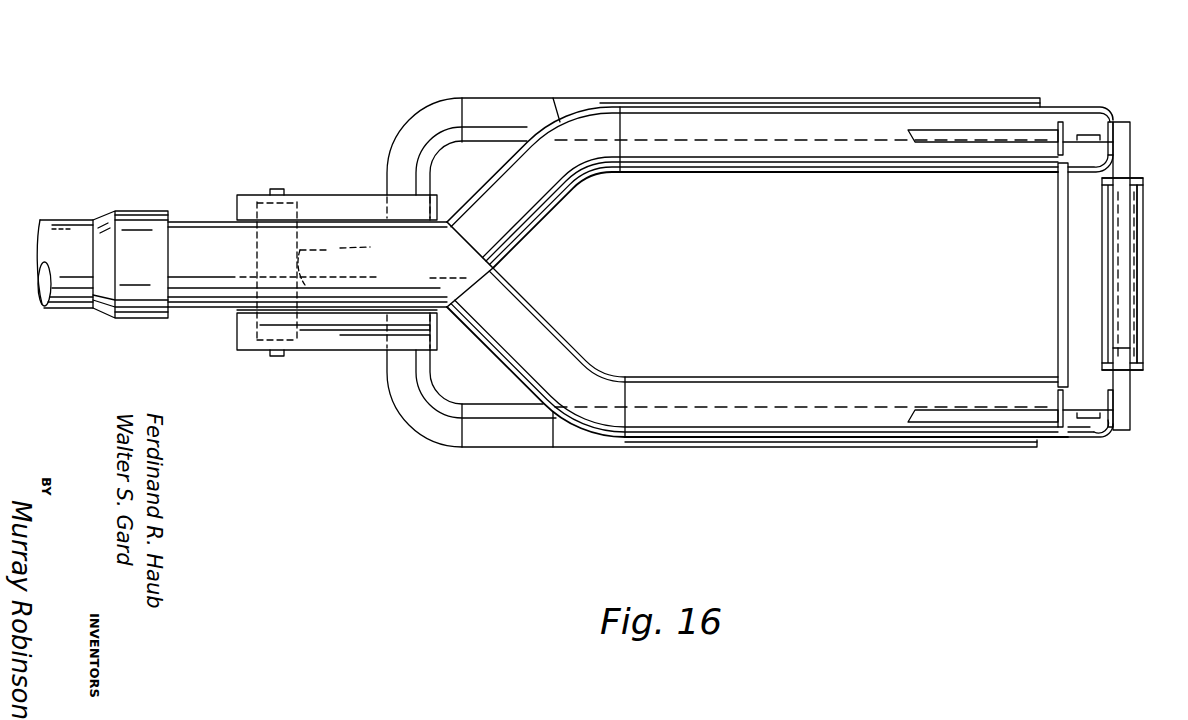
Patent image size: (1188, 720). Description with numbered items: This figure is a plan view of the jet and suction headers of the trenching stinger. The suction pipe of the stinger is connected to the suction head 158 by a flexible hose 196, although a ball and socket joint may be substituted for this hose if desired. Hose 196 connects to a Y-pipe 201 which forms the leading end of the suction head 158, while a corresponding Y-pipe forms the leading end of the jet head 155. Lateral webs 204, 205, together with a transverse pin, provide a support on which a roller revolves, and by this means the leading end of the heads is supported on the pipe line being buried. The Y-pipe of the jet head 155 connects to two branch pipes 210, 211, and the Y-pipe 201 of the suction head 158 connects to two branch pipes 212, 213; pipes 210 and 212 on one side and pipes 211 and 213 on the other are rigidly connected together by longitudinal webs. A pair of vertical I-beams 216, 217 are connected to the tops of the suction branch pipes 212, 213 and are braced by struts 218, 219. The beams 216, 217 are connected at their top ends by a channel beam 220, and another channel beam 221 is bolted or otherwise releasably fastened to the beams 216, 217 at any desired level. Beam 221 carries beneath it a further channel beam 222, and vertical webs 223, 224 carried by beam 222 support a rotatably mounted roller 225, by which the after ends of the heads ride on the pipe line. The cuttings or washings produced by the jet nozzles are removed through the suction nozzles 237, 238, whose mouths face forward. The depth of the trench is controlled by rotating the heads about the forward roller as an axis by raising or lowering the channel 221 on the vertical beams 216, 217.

The jet head 155 is at (713, 275).
The suction head 158 is at (785, 285).
The flexible hose 196 is at (56, 221).
The Y-pipe 201 is at (505, 263).
The lateral web 204 is at (327, 351).
The lateral web 205 is at (328, 195).
The branch pipe 210 is at (582, 448).
The branch pipe 211 is at (491, 98).
The branch pipe 212 is at (702, 377).
The branch pipe 213 is at (705, 173).
The vertical I-beam 216 is at (1093, 434).
The vertical I-beam 217 is at (1108, 122).
The strut 218 is at (988, 423).
The strut 219 is at (990, 130).
The channel beam 220 is at (1058, 310).
The channel beam 221 is at (1130, 408).
The channel beam 222 is at (1143, 256).
The vertical web 223 is at (1135, 366).
The vertical web 224 is at (1137, 178).
The roller 225 is at (1140, 217).
The suction nozzle 237 is at (1082, 438).
The suction nozzle 238 is at (1093, 166).